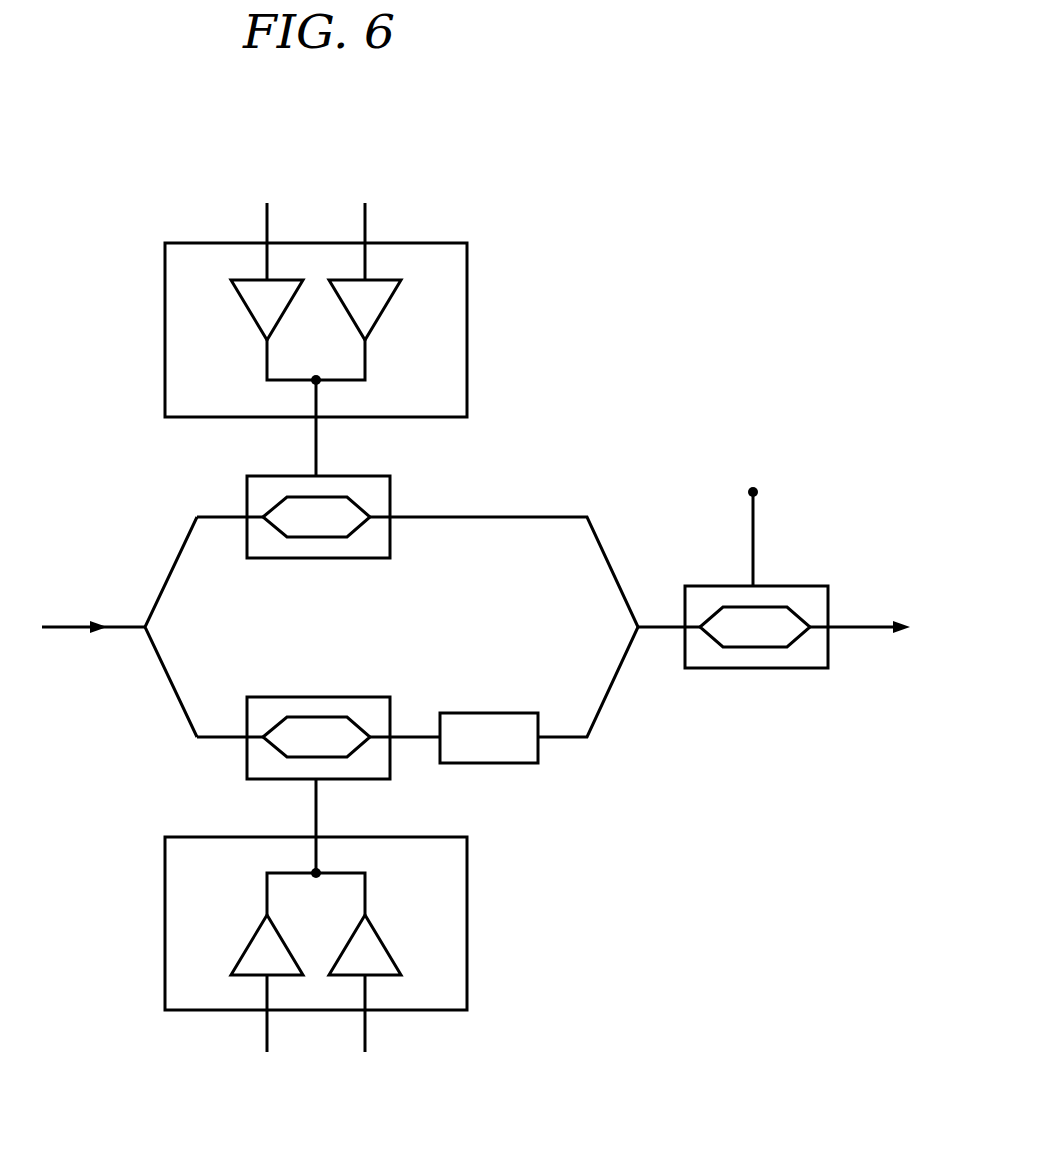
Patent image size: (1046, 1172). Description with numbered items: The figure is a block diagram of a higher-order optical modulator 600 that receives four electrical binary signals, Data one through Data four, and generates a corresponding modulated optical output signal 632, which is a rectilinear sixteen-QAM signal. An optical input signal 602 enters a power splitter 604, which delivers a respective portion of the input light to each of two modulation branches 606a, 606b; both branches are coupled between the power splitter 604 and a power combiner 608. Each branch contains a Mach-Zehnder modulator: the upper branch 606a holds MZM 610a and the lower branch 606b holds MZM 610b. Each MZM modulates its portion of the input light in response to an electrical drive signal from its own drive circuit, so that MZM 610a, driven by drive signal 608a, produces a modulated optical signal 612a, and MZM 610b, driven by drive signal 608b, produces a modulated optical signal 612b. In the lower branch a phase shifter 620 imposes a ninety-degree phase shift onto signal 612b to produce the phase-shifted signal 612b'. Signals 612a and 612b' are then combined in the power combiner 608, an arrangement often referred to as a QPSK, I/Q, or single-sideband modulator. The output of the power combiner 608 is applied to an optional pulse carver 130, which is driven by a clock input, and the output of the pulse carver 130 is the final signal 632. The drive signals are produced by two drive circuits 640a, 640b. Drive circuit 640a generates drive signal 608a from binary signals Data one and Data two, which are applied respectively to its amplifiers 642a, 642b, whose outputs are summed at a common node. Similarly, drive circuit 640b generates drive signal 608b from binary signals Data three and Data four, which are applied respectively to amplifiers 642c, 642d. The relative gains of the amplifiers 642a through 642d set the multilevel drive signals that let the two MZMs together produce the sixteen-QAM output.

The higher-order optical modulator 600 is at (336, 92).
The optical input signal 602 is at (68, 630).
The power splitter 604 is at (165, 626).
The modulation branch 606a is at (148, 516).
The modulation branch 606b is at (148, 738).
The power combiner 608 is at (614, 628).
The drive signal 608a is at (318, 450).
The drive signal 608b is at (318, 812).
The MZM 610a is at (283, 560).
The MZM 610b is at (283, 695).
The modulated optical signal 612a is at (470, 515).
The modulated optical signal 612b is at (417, 696).
The phase-shifted modulated optical signal 612b' is at (625, 695).
The phase shifter 620 is at (478, 711).
The pulse carver 130 is at (785, 584).
The modulated optical output signal 632 is at (863, 632).
The drive circuit 640a is at (370, 292).
The drive circuit 640b is at (370, 964).
The amplifier 642a is at (248, 312).
The amplifier 642b is at (383, 312).
The amplifier 642c is at (249, 940).
The amplifier 642d is at (383, 940).